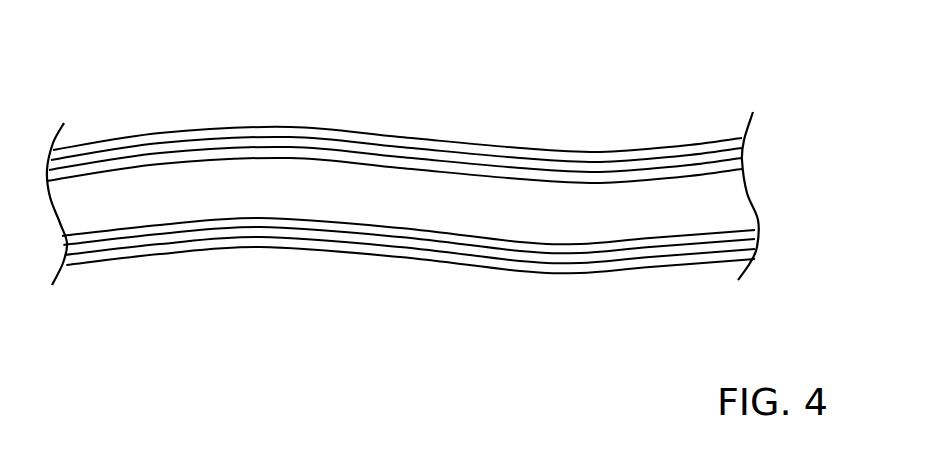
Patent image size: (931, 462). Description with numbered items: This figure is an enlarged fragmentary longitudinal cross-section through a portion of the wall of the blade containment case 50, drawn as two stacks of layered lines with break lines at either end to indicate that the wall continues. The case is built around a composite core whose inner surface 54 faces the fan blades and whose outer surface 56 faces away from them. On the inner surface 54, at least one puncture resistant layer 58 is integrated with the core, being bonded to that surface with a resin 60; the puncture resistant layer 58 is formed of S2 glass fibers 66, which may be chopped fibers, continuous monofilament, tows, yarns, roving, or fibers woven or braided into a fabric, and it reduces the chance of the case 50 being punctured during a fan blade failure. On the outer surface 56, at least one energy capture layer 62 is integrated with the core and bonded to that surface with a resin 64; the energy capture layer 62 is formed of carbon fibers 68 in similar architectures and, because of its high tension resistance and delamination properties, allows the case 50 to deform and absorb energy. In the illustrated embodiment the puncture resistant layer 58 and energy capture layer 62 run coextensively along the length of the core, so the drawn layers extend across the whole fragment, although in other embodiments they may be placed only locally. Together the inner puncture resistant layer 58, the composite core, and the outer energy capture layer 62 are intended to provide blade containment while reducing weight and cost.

The blade containment case 50 is at (559, 56).
The inner surface 54 is at (603, 240).
The outer surface 56 is at (655, 177).
The puncture resistant layer 58 is at (373, 252).
The resin 60 is at (493, 255).
The energy capture layer 62 is at (468, 155).
The resin 64 is at (365, 152).
The glass fibers 66 is at (238, 233).
The carbon fibers 68 is at (582, 155).